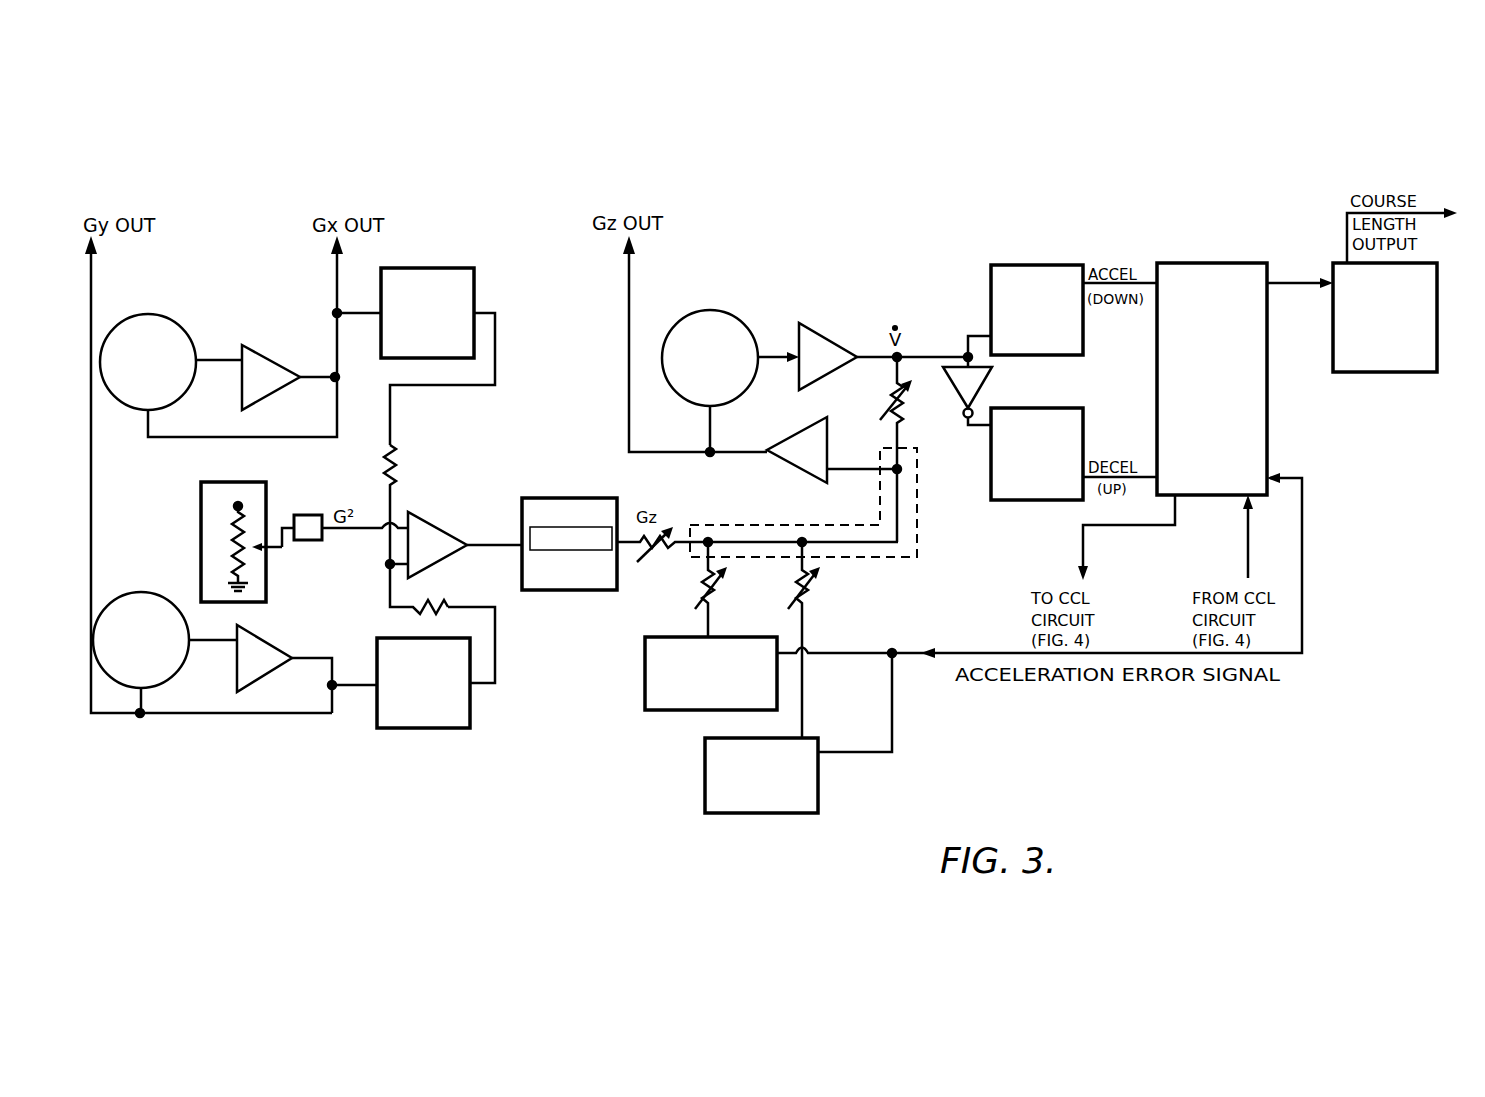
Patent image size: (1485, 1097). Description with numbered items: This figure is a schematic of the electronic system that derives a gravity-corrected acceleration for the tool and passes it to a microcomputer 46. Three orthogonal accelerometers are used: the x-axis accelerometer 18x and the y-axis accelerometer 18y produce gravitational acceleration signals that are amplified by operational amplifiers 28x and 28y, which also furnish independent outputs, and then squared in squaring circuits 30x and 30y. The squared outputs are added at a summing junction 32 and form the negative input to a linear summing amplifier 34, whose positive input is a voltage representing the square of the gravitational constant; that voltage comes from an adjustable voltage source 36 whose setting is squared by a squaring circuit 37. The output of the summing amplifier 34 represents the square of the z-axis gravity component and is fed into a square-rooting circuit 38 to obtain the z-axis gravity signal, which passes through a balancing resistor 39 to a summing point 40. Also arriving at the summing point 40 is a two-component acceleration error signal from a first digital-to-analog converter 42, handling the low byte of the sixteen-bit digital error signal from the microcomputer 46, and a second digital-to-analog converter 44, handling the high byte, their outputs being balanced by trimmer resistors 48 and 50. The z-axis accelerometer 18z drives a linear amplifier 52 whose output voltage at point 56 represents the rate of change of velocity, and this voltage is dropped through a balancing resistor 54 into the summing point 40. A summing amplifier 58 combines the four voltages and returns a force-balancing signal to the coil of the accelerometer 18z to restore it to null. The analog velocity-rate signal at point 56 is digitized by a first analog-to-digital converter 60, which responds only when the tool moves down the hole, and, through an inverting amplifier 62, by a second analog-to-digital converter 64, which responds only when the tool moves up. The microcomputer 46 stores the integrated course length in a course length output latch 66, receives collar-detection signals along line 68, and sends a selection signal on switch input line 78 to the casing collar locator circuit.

The x-axis accelerometer 18x is at (170, 318).
The operational amplifier 28x is at (267, 348).
The squaring circuit 30x is at (474, 293).
The y-axis accelerometer 18y is at (152, 592).
The operational amplifier 28y is at (278, 644).
The squaring circuit 30y is at (470, 720).
The adjustable voltage source 36 is at (266, 494).
The squaring circuit 37 is at (313, 541).
The summing junction 32 is at (388, 565).
The linear summing amplifier 34 is at (450, 533).
The square-rooting circuit 38 is at (573, 590).
The balancing resistor 39 is at (670, 532).
The summing point 40 is at (917, 542).
The first digital-to-analog converter 42 is at (645, 682).
The second digital-to-analog converter 44 is at (705, 773).
The balancing resistor 48 is at (705, 575).
The balancing resistor 50 is at (797, 580).
The z-axis accelerometer 18z is at (733, 312).
The linear amplifier 52 is at (835, 342).
The balancing resistor 54 is at (888, 396).
The point 56 is at (892, 364).
The summing amplifier 58 is at (798, 474).
The first analog-to-digital converter 60 is at (1035, 265).
The inverting amplifier 62 is at (961, 398).
The second analog-to-digital converter 64 is at (1053, 408).
The microcomputer 46 is at (1205, 263).
The course length output latch 66 is at (1388, 372).
The line 68 is at (1248, 549).
The switch input line 78 is at (1127, 527).